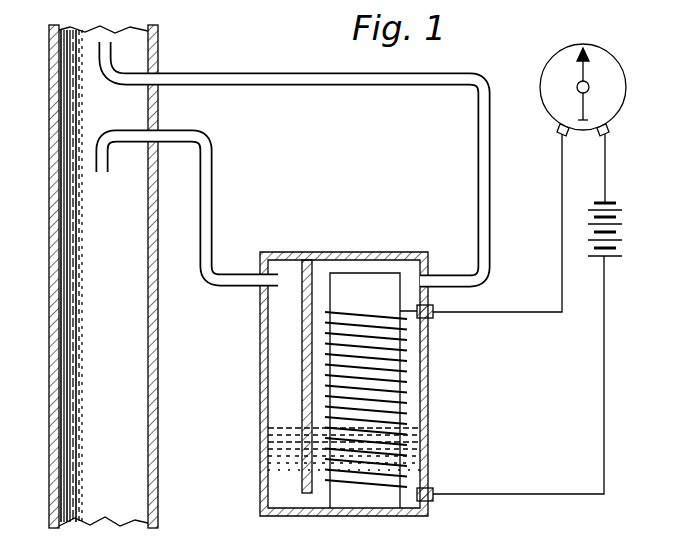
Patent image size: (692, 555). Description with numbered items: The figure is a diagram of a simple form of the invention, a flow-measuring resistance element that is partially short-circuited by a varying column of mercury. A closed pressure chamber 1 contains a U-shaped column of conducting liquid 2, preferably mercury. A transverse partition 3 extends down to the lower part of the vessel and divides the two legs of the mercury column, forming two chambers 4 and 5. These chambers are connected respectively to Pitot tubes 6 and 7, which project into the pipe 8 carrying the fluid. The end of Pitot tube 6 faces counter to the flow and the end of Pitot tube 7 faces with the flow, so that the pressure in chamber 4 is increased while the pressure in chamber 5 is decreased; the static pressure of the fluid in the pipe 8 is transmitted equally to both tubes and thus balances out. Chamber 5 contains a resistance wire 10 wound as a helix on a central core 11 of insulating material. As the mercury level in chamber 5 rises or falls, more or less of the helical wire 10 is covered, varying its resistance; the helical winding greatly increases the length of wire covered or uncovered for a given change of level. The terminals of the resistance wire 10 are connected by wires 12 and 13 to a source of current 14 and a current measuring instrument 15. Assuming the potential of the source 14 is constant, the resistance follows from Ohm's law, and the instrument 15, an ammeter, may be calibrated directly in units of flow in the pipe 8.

The closed pressure chamber 1 is at (322, 256).
The conducting liquid 2 is at (319, 494).
The transverse partition 3 is at (304, 374).
The chamber 4 is at (276, 322).
The chamber 5 is at (412, 366).
The Pitot tube 6 is at (101, 158).
The Pitot tube 7 is at (104, 56).
The pipe 8 is at (82, 222).
The resistance wire 10 is at (406, 399).
The central core 11 is at (371, 283).
The wire 12 is at (540, 286).
The wire 13 is at (556, 470).
The source of current 14 is at (617, 233).
The current measuring instrument 15 is at (611, 99).